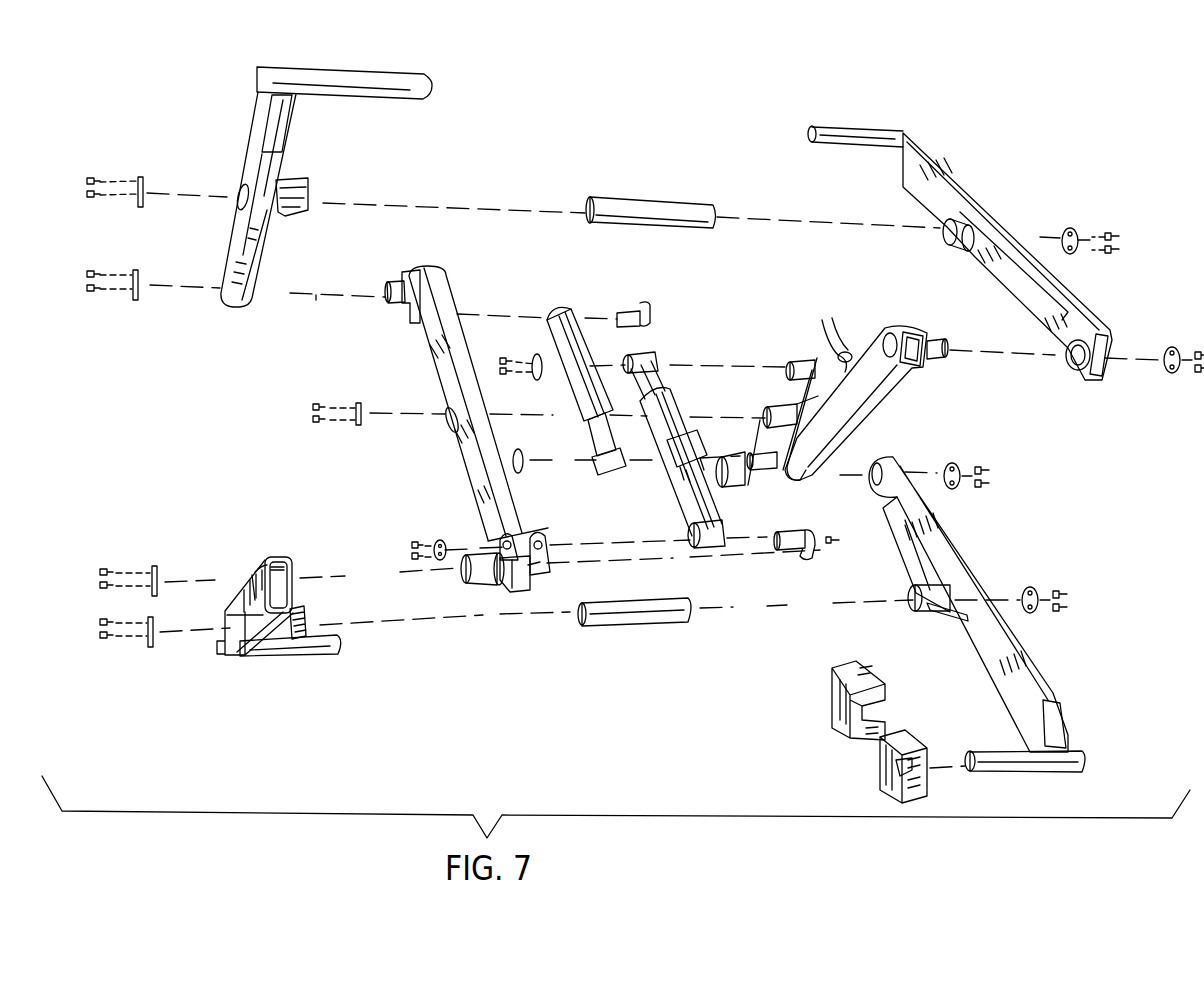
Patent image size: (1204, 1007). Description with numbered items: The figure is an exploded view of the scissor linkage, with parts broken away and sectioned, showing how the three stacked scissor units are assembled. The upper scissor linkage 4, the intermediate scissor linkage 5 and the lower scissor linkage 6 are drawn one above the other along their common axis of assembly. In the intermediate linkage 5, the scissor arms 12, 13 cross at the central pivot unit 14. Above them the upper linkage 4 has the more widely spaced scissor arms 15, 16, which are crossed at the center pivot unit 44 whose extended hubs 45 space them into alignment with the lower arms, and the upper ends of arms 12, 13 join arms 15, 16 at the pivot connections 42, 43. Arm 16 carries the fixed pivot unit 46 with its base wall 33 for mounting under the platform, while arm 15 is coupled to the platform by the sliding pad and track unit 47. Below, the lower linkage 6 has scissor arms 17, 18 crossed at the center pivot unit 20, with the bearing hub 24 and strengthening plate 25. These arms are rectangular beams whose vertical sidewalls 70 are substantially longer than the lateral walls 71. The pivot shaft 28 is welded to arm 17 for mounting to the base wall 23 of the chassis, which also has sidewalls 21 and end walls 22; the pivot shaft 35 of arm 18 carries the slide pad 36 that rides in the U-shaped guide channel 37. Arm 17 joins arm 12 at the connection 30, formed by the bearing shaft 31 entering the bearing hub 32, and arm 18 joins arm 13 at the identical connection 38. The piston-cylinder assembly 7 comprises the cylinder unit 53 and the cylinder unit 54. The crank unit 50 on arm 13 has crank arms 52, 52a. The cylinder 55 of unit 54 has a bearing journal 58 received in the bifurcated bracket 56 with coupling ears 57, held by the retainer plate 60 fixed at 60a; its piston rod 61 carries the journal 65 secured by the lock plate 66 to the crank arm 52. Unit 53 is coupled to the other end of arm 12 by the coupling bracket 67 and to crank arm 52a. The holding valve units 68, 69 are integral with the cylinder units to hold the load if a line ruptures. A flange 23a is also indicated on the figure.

The upper scissor linkage 4 is at (175, 151).
The intermediate scissor linkage 5 is at (245, 428).
The lower scissor linkage 6 is at (422, 665).
The piston-cylinder assembly 7 is at (672, 512).
The scissor arm 12 is at (465, 497).
The scissor arm 13 is at (875, 393).
The central pivot unit 14 is at (732, 411).
The scissor arm 15 is at (258, 250).
The scissor arm 16 is at (942, 183).
The scissor arm 17 is at (235, 660).
The scissor arm 18 is at (1047, 684).
The center pivot unit 20 is at (722, 608).
The sidewalls 21 is at (302, 622).
The end walls 22 is at (927, 614).
The base wall 23 is at (910, 577).
The gusset flange 23a is at (957, 607).
The bearing hub 24 is at (623, 620).
The strengthening plate 25 is at (153, 645).
The pivot shaft 28 is at (317, 655).
The connection 30 is at (380, 567).
The bearing shaft 31 is at (472, 582).
The bearing hub 32 is at (268, 562).
The base wall 33 is at (155, 563).
The pivot shaft 35 is at (1007, 770).
The slide pad 36 is at (928, 797).
The guide channel 37 is at (838, 720).
The connection 38 is at (838, 478).
The pivot connection 42 is at (314, 292).
The pivot connection 43 is at (1023, 352).
The center pivot unit 44 is at (838, 220).
The extended hub 45 is at (305, 186).
The fixed pivot unit 46 is at (886, 124).
The sliding pad and track unit 47 is at (404, 67).
The crank unit 50 is at (794, 352).
The crank arm 52 is at (838, 352).
The crank arm 52a is at (803, 478).
The cylinder unit 53 is at (550, 341).
The cylinder unit 54 is at (664, 492).
The cylinder 55 is at (712, 514).
The bifurcated bracket 56 is at (538, 587).
The coupling ears 57 is at (540, 537).
The bearing journal 58 is at (710, 552).
The retainer plate 60 is at (806, 560).
The retainer plate fixing 60a is at (652, 562).
The piston rod 61 is at (648, 387).
The journal 65 is at (648, 355).
The lock plate 66 is at (535, 378).
The coupling bracket 67 is at (450, 303).
The holding valve unit 68 is at (668, 450).
The holding valve unit 69 is at (567, 393).
The vertical sidewalls 70 is at (273, 598).
The lateral walls 71 is at (278, 560).